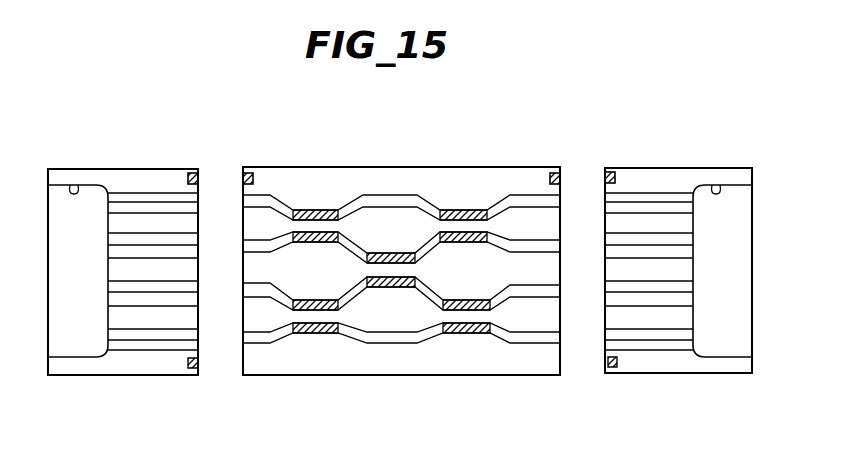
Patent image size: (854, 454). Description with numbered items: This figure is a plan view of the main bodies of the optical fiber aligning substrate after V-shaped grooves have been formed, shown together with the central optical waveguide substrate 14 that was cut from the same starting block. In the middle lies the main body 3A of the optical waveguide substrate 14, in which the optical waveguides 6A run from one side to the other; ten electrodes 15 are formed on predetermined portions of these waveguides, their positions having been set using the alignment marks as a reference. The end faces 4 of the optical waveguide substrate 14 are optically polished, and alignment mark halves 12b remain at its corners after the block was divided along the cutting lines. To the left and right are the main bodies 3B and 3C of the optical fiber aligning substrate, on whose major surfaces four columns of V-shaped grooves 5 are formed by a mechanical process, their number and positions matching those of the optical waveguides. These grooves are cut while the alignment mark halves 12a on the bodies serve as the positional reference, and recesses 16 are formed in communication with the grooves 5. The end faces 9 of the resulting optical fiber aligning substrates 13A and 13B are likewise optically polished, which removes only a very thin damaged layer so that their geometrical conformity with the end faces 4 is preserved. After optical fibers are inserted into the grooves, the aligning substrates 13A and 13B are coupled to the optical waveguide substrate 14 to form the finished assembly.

The main body of optical waveguide substrate 3A is at (505, 365).
The main body of optical fiber aligning substrate 3B is at (111, 169).
The main body of optical fiber aligning substrate 3C is at (677, 168).
The end faces of optical waveguide substrate 4 is at (240, 196).
The V-shaped grooves 5 is at (137, 246).
The optical waveguides 6A is at (406, 345).
The end faces of optical fiber aligning substrates 9 is at (199, 196).
The alignment mark halves 12a is at (190, 175).
The alignment mark halves 12b is at (252, 175).
The optical fiber aligning substrate 13A is at (175, 375).
The optical fiber aligning substrate 13B is at (657, 373).
The optical waveguide substrate 14 is at (451, 378).
The electrodes 15 is at (450, 210).
The recesses 16 is at (74, 186).